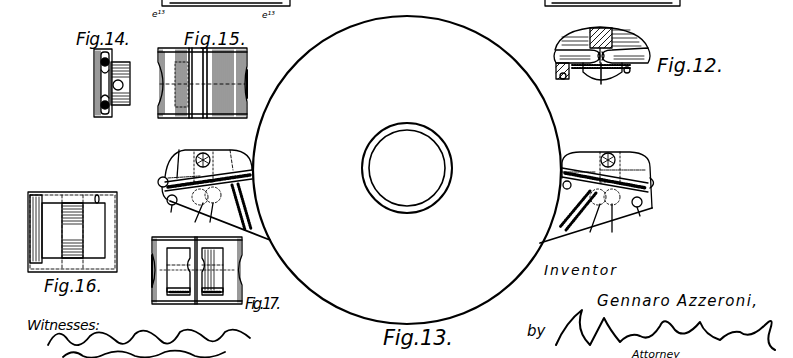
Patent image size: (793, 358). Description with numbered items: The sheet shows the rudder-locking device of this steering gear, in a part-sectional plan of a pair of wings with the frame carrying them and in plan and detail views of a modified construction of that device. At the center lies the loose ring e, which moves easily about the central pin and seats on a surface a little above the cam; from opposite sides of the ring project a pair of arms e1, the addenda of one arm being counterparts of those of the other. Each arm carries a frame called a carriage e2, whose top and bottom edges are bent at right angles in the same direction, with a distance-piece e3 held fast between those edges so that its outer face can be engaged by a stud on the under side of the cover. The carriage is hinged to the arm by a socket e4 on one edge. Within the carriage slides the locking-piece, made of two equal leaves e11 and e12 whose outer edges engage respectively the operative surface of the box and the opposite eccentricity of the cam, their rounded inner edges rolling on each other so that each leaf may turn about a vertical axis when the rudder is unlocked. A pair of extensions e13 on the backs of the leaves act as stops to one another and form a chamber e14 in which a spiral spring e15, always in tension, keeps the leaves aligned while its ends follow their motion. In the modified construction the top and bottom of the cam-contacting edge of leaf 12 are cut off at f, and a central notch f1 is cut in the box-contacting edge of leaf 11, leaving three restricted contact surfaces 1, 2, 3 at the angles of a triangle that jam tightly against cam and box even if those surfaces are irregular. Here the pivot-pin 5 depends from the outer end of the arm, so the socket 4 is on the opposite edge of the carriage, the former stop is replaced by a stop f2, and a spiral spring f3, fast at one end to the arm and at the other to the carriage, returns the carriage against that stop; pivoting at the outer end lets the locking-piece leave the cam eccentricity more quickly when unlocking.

In FIG. 13, the loose ring e is at (407, 170).
In FIG. 13, the arm e1 is at (258, 233).
In FIG. 12, the carriage e2 is at (630, 30).
In FIG. 16, the carriage e2 is at (97, 194).
In FIG. 13, the carriage e2 is at (586, 152).
In FIG. 12, the distance-piece e3 is at (606, 27).
In FIG. 16, the distance-piece e3 is at (72, 230).
In FIG. 13, the distance-piece e3 is at (202, 152).
In FIG. 12, the socket e4 is at (566, 80).
In FIG. 12, the leaf e11 is at (646, 44).
In FIG. 13, the leaf e11 is at (652, 183).
In FIG. 12, the leaf e12 is at (556, 54).
In FIG. 12, the extension e13 is at (603, 82).
In FIG. 17, the extension e13 is at (216, 305).
In FIG. 13, the extension e13 is at (404, 216).
In FIG. 12, the chamber e14 is at (626, 74).
In FIG. 12, the spiral spring e15 is at (584, 72).
In FIG. 14, the cut-off portion f is at (103, 107).
In FIG. 15, the cut-off portion f is at (254, 104).
In FIG. 17, the cut-off portion f is at (152, 300).
In FIG. 15, the central notch f1 is at (157, 68).
In FIG. 17, the central notch f1 is at (242, 270).
In FIG. 13, the central notch f1 is at (159, 180).
In FIG. 13, the stop f2 is at (563, 186).
In FIG. 13, the spiral spring f3 is at (407, 216).
In FIG. 15, the contact surface 1 is at (198, 55).
In FIG. 17, the contact surface 1 is at (203, 245).
In FIG. 15, the contact surface 2 is at (197, 113).
In FIG. 17, the contact surface 2 is at (202, 301).
In FIG. 15, the contact surface 3 is at (255, 84).
In FIG. 17, the contact surface 3 is at (145, 271).
In FIG. 16, the socket 4 is at (31, 216).
In FIG. 13, the socket 4 is at (404, 216).
In FIG. 13, the pivot-pin 5 is at (655, 208).
In FIG. 15, the leaf 11 is at (177, 84).
In FIG. 17, the leaf 11 is at (174, 270).
In FIG. 13, the leaf 11 is at (179, 158).
In FIG. 14, the leaf 12 is at (97, 83).
In FIG. 15, the leaf 12 is at (208, 83).
In FIG. 17, the leaf 12 is at (218, 270).